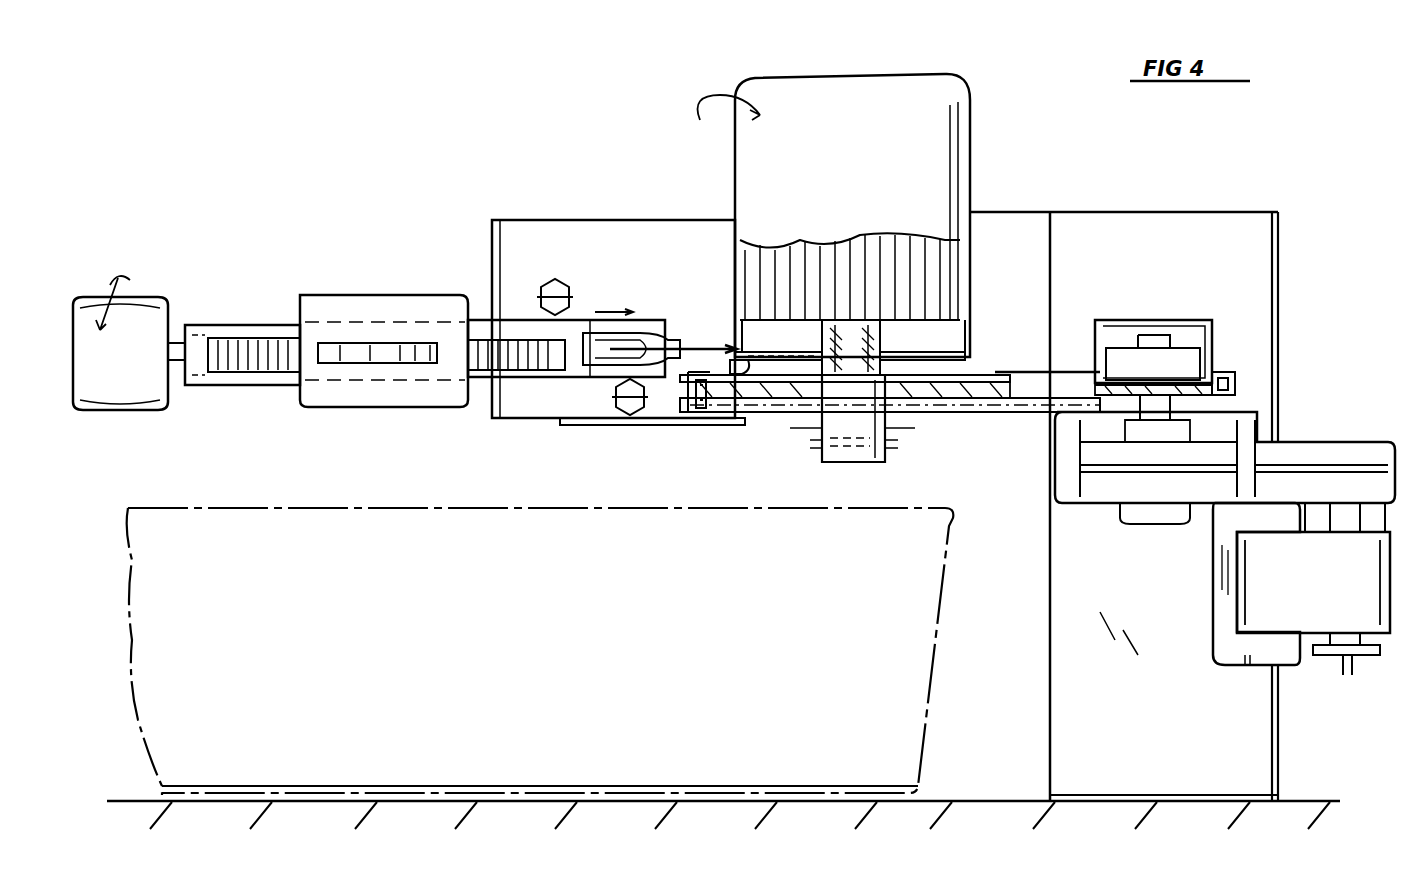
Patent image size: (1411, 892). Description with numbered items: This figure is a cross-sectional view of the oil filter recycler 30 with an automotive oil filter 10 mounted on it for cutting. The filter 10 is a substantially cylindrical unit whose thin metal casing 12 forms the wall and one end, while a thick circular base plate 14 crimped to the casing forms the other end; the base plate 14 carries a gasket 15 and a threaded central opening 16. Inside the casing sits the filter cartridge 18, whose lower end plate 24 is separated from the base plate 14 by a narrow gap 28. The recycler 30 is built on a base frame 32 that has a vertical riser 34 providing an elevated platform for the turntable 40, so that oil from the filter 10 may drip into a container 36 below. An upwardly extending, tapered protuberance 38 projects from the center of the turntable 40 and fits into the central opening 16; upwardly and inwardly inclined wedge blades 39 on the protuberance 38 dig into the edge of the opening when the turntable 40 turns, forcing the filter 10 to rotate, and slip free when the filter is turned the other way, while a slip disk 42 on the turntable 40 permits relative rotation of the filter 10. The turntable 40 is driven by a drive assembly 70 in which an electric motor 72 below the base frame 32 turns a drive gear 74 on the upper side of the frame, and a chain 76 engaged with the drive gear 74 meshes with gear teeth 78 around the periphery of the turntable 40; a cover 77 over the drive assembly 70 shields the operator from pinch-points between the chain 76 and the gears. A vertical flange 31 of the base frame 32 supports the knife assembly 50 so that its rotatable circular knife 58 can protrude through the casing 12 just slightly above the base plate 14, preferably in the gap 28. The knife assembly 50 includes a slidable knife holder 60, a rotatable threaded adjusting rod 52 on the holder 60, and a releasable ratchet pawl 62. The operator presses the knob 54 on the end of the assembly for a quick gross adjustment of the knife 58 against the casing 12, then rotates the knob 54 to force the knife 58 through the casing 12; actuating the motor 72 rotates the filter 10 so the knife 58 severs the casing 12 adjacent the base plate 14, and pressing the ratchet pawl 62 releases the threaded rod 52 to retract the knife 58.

The oil filter 10 is at (950, 70).
The casing 12 is at (972, 182).
The base plate 14 is at (940, 350).
The gasket 15 is at (742, 376).
The threaded central opening 16 is at (950, 330).
The filter cartridge 18 is at (960, 253).
The lower end plate 24 is at (745, 325).
The gap 28 is at (760, 345).
The oil filter recycler 30 is at (1171, 186).
The vertical flange 31 is at (565, 218).
The base frame 32 is at (662, 428).
The vertical riser 34 is at (1050, 698).
The container 36 is at (940, 632).
The protuberance 38 is at (852, 335).
The wedge blades 39 is at (920, 395).
The turntable 40 is at (955, 400).
The slip disk 42 is at (985, 385).
The knife assembly 50 is at (384, 286).
The threaded adjusting rod 52 is at (270, 372).
The knob 54 is at (140, 408).
The knife 58 is at (688, 345).
The knife holder 60 is at (228, 324).
The ratchet pawl 62 is at (390, 365).
The drive assembly 70 is at (1146, 550).
The electric motor 72 is at (1213, 565).
The drive gear 74 is at (1235, 384).
The chain 76 is at (696, 410).
The cover 77 is at (1078, 365).
The gear teeth 78 is at (1000, 405).